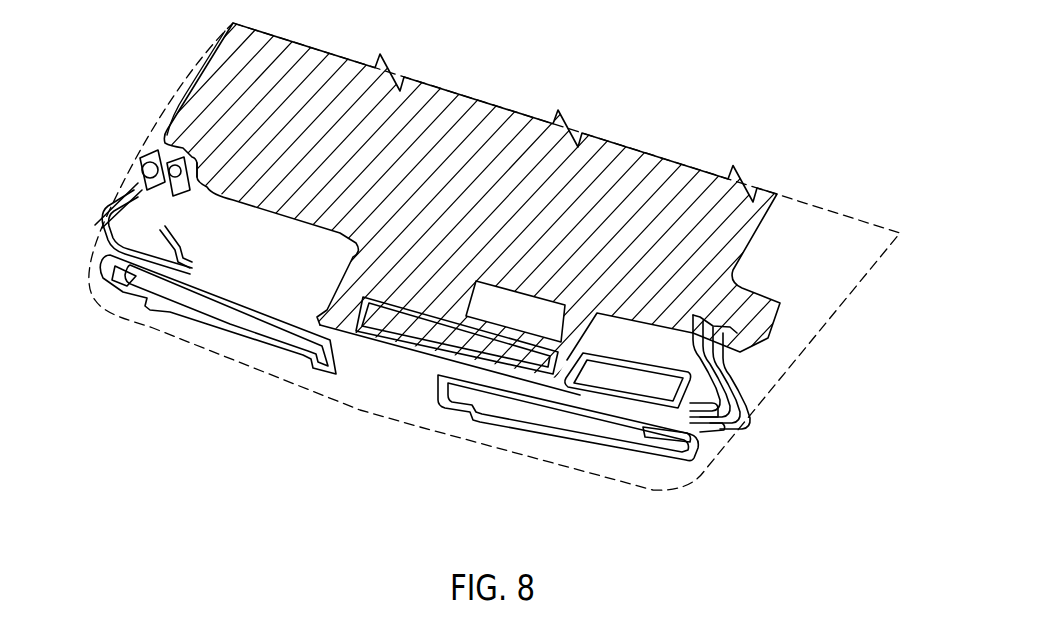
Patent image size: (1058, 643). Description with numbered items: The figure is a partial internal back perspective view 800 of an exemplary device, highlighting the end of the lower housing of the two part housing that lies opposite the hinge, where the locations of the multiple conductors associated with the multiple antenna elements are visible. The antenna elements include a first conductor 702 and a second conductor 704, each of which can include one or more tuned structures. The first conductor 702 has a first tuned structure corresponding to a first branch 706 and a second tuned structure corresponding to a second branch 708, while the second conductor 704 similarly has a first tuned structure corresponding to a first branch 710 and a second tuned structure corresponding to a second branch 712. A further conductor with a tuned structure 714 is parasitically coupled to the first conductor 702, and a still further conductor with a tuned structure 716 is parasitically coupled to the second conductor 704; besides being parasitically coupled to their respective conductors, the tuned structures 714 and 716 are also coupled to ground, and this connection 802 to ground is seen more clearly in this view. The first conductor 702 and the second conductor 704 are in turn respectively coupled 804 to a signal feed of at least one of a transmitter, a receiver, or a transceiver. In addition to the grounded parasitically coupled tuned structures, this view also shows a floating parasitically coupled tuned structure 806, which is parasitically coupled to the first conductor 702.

The partial internal back perspective view 800 is at (722, 112).
The connection to ground 802 is at (142, 168).
The coupling to signal feed 804 is at (198, 162).
The floating parasitically coupled tuned structure 806 is at (390, 343).
The first conductor 702 is at (727, 430).
The second conductor 704 is at (103, 222).
The first branch 706 is at (548, 435).
The second branch 708 is at (660, 457).
The first branch 710 is at (258, 352).
The second branch 712 is at (140, 303).
The tuned structure 714 is at (752, 380).
The tuned structure 716 is at (167, 235).